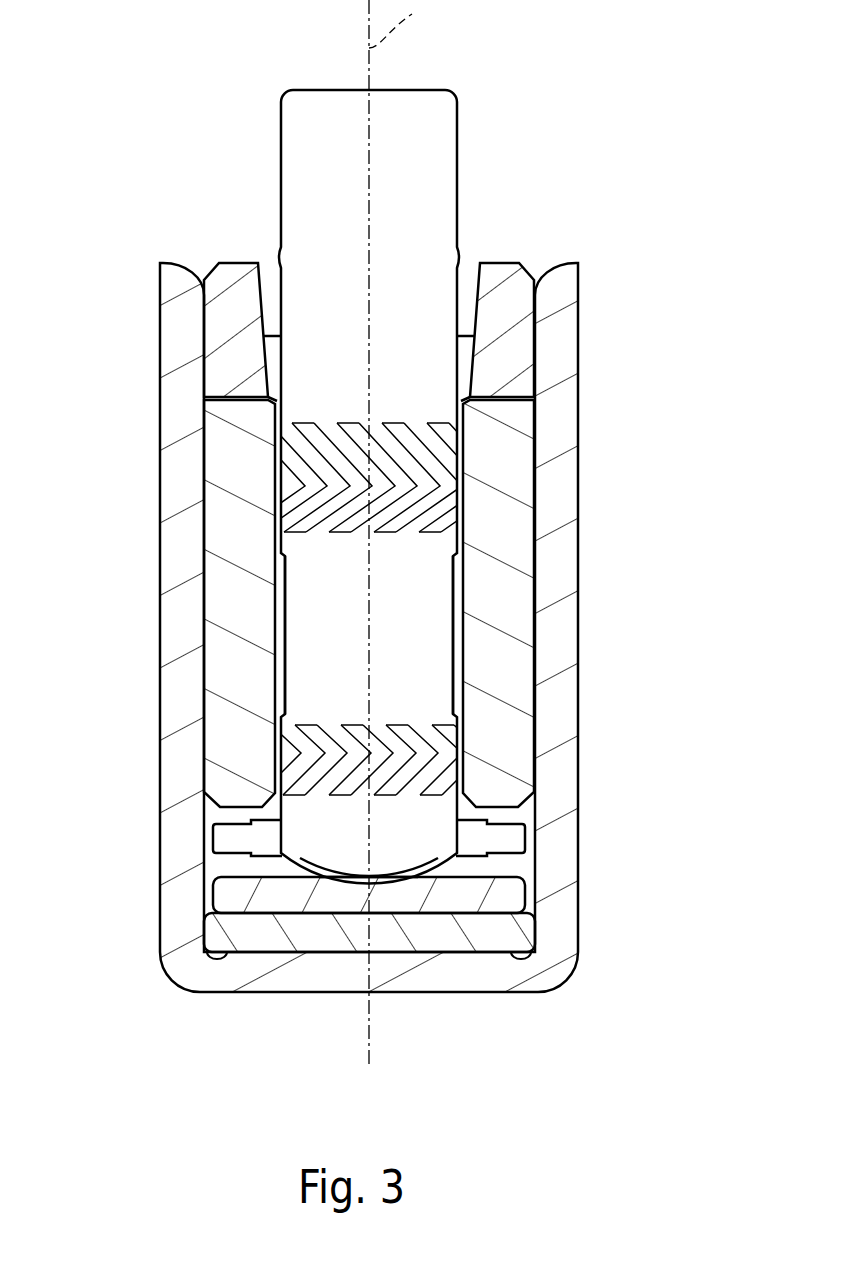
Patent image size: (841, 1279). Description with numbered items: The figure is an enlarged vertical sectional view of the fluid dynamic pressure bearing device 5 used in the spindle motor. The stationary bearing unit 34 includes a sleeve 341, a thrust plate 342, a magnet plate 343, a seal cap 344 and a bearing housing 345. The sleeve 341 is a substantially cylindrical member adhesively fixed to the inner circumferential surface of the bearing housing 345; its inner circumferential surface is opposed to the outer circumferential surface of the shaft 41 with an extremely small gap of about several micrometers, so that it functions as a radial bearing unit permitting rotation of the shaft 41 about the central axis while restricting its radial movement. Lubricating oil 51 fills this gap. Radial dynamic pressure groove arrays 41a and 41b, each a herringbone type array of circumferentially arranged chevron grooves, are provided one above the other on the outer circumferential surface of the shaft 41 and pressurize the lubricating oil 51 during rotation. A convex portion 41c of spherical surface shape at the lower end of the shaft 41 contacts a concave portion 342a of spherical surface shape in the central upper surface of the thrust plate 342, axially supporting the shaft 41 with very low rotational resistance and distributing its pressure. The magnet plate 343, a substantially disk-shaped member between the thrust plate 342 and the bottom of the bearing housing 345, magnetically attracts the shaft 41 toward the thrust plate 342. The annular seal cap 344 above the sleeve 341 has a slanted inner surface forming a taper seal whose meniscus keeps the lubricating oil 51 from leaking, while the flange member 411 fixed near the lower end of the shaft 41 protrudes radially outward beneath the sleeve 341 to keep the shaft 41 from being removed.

The fluid dynamic pressure bearing device 5 is at (375, 532).
The stationary bearing unit 34 is at (582, 970).
The sleeve 341 is at (222, 607).
The thrust plate 342 is at (233, 895).
The concave portion 342a is at (359, 876).
The magnet plate 343 is at (235, 932).
The seal cap 344 is at (220, 326).
The bearing housing 345 is at (552, 477).
The shaft 41 is at (306, 182).
The radial dynamic pressure groove array 41a is at (346, 422).
The radial dynamic pressure groove array 41b is at (352, 724).
The convex portion 41c is at (396, 886).
The flange member 411 is at (513, 837).
The lubricating oil 51 is at (458, 647).